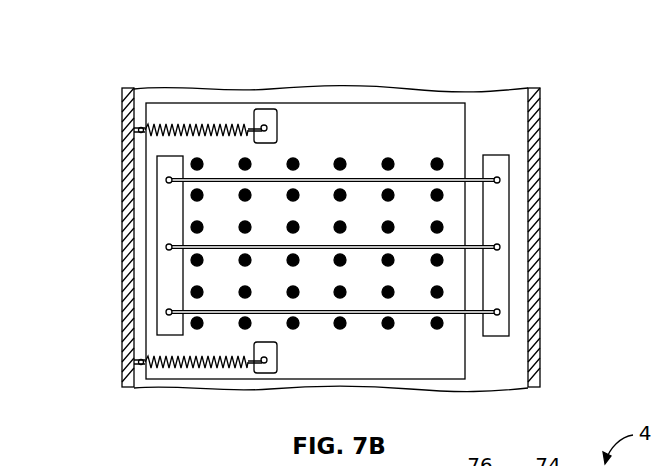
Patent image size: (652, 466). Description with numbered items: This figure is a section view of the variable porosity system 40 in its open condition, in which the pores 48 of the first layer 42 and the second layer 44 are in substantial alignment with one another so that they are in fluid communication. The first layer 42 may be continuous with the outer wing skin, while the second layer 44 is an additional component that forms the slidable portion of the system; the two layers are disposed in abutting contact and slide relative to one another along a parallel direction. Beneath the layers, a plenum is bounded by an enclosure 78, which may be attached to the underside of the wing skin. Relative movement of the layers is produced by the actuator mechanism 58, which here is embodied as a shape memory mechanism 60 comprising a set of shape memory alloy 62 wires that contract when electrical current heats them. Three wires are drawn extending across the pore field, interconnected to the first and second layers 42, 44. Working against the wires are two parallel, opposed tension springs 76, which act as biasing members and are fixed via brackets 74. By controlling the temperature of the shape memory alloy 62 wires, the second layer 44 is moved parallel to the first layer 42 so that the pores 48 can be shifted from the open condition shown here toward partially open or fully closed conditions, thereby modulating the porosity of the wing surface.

The variable porosity system 40 is at (526, 73).
The first layer 42 is at (485, 358).
The second layer 44 is at (425, 363).
The pores 48 is at (433, 190).
The actuator mechanism 58 is at (448, 178).
The shape memory mechanism 60 is at (455, 308).
The shape memory alloy wires 62 is at (333, 279).
The brackets 74 is at (262, 111).
The springs 76 is at (177, 122).
The enclosure 78 is at (122, 308).